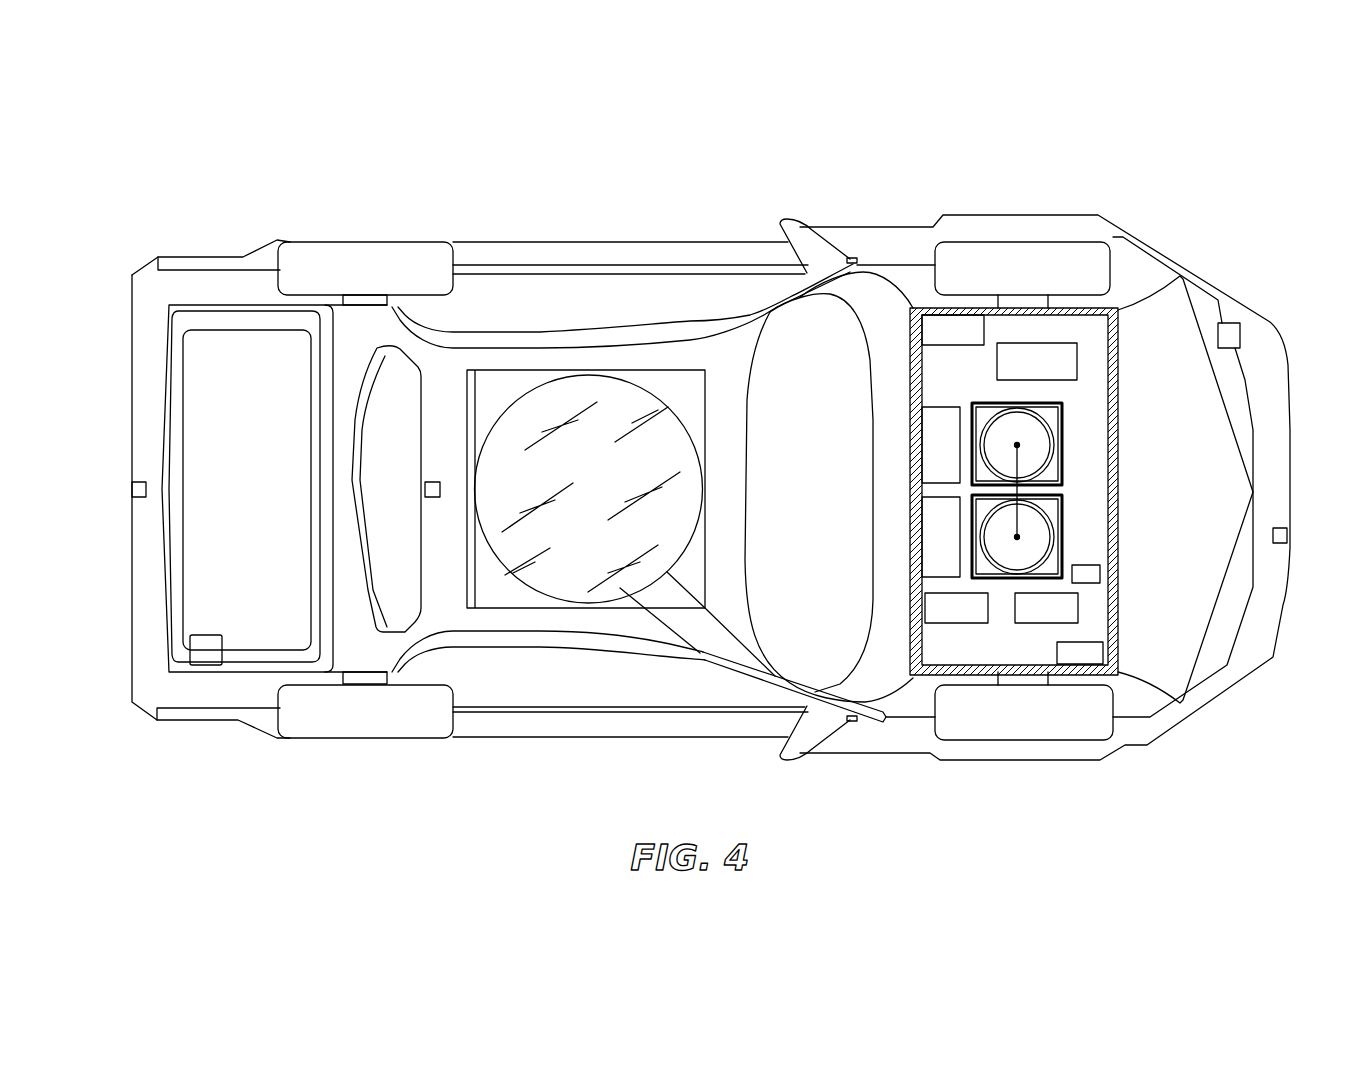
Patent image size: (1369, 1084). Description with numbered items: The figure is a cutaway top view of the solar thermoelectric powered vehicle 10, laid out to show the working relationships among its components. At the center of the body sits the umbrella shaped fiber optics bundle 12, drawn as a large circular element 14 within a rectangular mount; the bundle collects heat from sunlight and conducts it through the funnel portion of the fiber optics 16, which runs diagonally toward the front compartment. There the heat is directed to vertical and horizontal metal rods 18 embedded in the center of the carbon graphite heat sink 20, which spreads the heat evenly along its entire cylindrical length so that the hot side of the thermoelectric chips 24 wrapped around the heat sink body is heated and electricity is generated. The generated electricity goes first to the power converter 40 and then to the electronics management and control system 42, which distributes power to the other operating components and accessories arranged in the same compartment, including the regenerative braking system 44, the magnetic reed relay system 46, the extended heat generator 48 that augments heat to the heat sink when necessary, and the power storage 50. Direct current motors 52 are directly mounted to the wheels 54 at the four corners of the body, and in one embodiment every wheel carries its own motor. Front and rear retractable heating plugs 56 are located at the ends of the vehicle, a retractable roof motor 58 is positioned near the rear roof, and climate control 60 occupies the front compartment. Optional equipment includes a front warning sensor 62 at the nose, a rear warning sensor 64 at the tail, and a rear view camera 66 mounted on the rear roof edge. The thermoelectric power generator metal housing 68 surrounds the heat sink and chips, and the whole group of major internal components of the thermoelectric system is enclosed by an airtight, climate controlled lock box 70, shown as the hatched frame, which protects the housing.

The vehicle 10 is at (1211, 186).
The umbrella shaped fiber optics bundle 12 is at (538, 578).
The spare tire / circular module 14 is at (532, 377).
The funnel portion of the fiber optics 16 is at (708, 645).
The vertical and horizontal metal rods 18 is at (1017, 445).
The carbon graphite heat sink 20 is at (1028, 420).
The thermoelectric chips 24 is at (1057, 542).
The power converter 40 is at (1090, 572).
The electronics management and control system 42 is at (930, 433).
The regenerative braking system 44 is at (1072, 605).
The magnetic reed relay system 46 is at (935, 605).
The extended heat generator 48 is at (1072, 360).
The power storage 50 is at (1100, 652).
The direct current (DC) motors 52 is at (1027, 305).
The wheels 54 is at (412, 262).
The front and/or rear retractable heating plugs 56 is at (202, 660).
The retractable roof motor 58 is at (457, 587).
The climate control 60 is at (920, 329).
The front warning sensor 62 is at (1287, 535).
The rear warning sensor 64 is at (132, 487).
The rear view camera 66 is at (432, 480).
The thermoelectric power generator metal housing 68 is at (1062, 467).
The airtight, climate controlled lock box 70 is at (1112, 458).